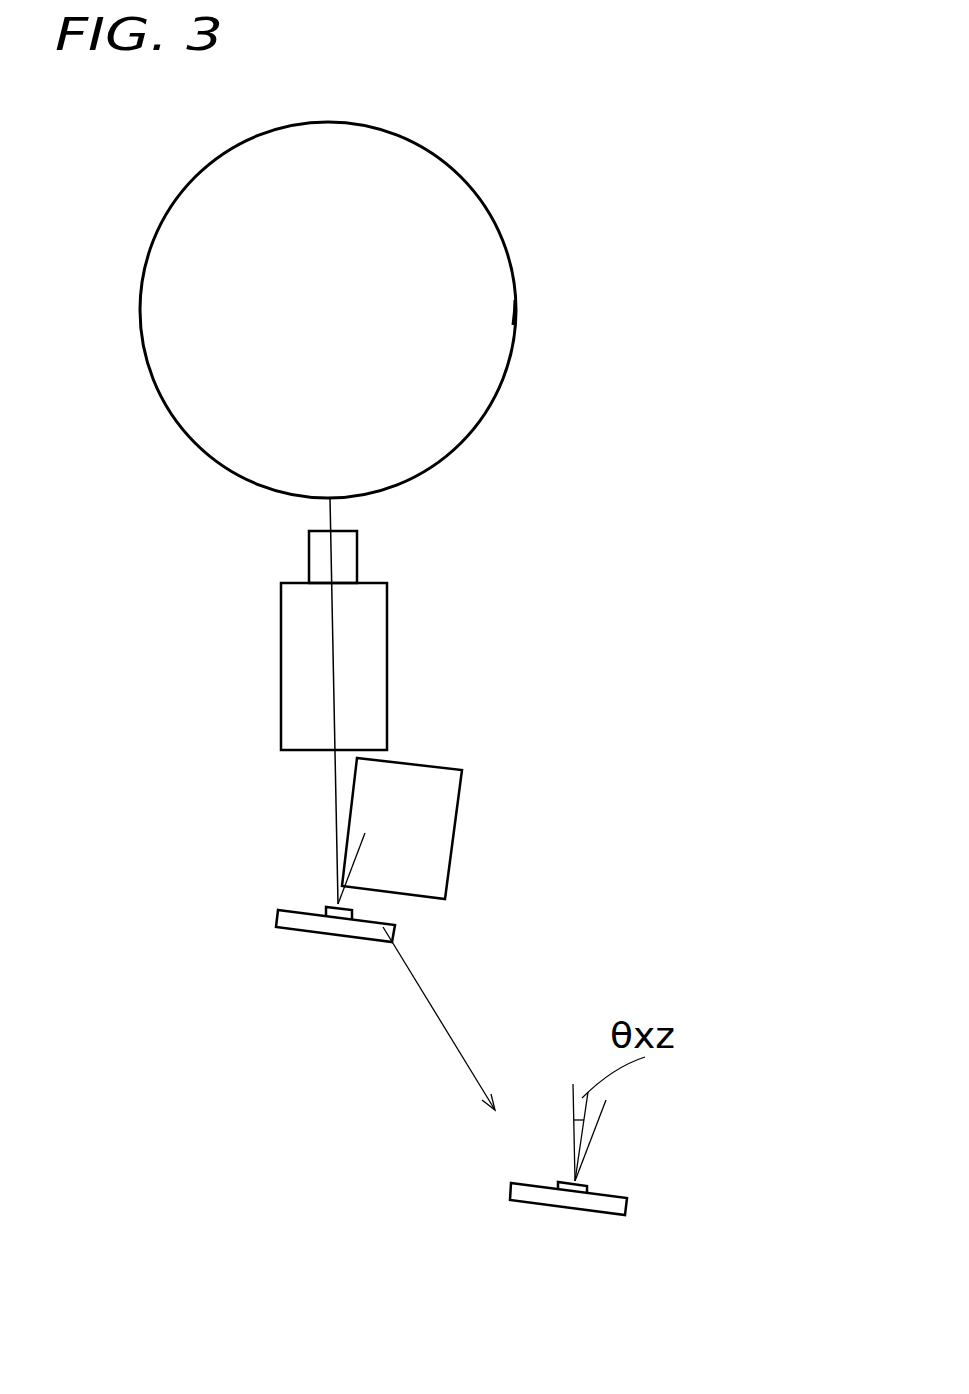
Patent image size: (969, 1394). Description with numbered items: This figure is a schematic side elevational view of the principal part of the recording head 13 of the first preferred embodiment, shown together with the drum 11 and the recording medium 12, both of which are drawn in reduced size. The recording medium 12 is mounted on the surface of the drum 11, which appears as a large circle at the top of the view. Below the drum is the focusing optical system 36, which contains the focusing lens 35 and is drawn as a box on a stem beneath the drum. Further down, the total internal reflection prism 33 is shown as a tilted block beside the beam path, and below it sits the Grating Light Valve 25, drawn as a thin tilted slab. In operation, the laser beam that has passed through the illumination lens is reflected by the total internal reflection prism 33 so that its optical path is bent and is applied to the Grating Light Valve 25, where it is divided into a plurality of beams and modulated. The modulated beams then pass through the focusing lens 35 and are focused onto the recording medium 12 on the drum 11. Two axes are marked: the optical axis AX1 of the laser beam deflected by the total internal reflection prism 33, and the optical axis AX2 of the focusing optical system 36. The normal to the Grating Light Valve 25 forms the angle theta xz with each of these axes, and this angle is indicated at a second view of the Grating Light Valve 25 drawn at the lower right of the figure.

The drum 11 is at (470, 402).
The recording medium 12 is at (515, 312).
The recording head 13 is at (415, 701).
The Grating Light Valve 25 is at (343, 928).
The total internal reflection prism 33 is at (440, 797).
The focusing lens 35 is at (432, 640).
The focusing optical system 36 is at (372, 618).
The optical axis of the laser beam deflected by the total internal reflection prism AX1 is at (355, 863).
The optical axis of the focusing optical system AX2 is at (337, 805).